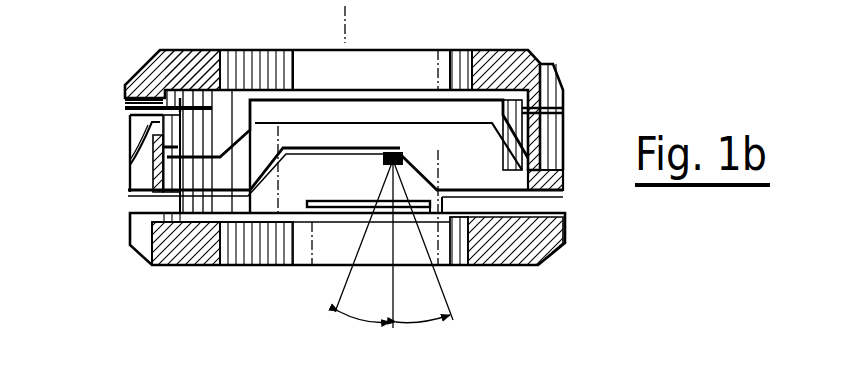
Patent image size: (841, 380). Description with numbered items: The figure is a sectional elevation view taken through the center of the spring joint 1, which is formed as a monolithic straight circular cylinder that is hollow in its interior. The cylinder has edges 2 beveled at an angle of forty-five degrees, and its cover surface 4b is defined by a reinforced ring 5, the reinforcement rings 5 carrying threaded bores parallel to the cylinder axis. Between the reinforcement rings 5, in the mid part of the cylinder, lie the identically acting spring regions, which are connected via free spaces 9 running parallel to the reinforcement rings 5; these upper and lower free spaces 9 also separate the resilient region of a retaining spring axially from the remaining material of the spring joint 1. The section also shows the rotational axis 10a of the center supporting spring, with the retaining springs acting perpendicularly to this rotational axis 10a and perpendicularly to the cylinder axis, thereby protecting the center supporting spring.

The spring joint 1 is at (108, 148).
The beveled edges 2 is at (542, 62).
The cover surface 4b is at (428, 48).
The reinforced ring 5 is at (148, 70).
The free spaces 9 is at (362, 115).
The rotational axis of the supporting spring 10a is at (400, 160).